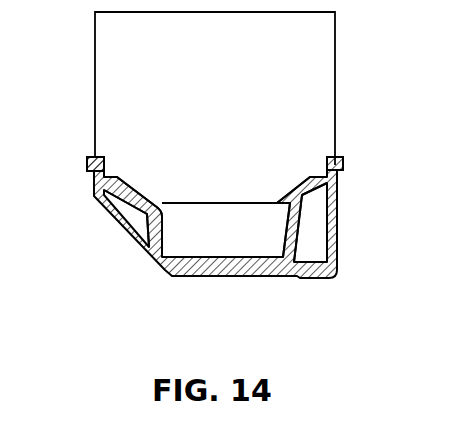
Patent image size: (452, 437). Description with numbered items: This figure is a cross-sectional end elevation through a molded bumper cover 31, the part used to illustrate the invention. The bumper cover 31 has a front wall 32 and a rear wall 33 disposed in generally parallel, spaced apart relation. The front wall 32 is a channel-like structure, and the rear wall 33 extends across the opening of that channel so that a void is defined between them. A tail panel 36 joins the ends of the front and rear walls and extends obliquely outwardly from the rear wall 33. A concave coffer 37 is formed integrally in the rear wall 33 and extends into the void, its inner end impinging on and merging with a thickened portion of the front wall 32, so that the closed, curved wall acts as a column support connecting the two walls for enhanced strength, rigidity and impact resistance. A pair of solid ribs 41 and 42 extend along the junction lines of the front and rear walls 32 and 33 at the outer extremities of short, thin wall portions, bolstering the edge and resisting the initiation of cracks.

The bumper cover 31 is at (337, 102).
The front wall 32 is at (253, 277).
The rear wall 33 is at (147, 203).
The tail panel 36 is at (246, 70).
The concave coffer 37 is at (286, 237).
The solid rib 41 is at (88, 163).
The solid rib 42 is at (344, 163).